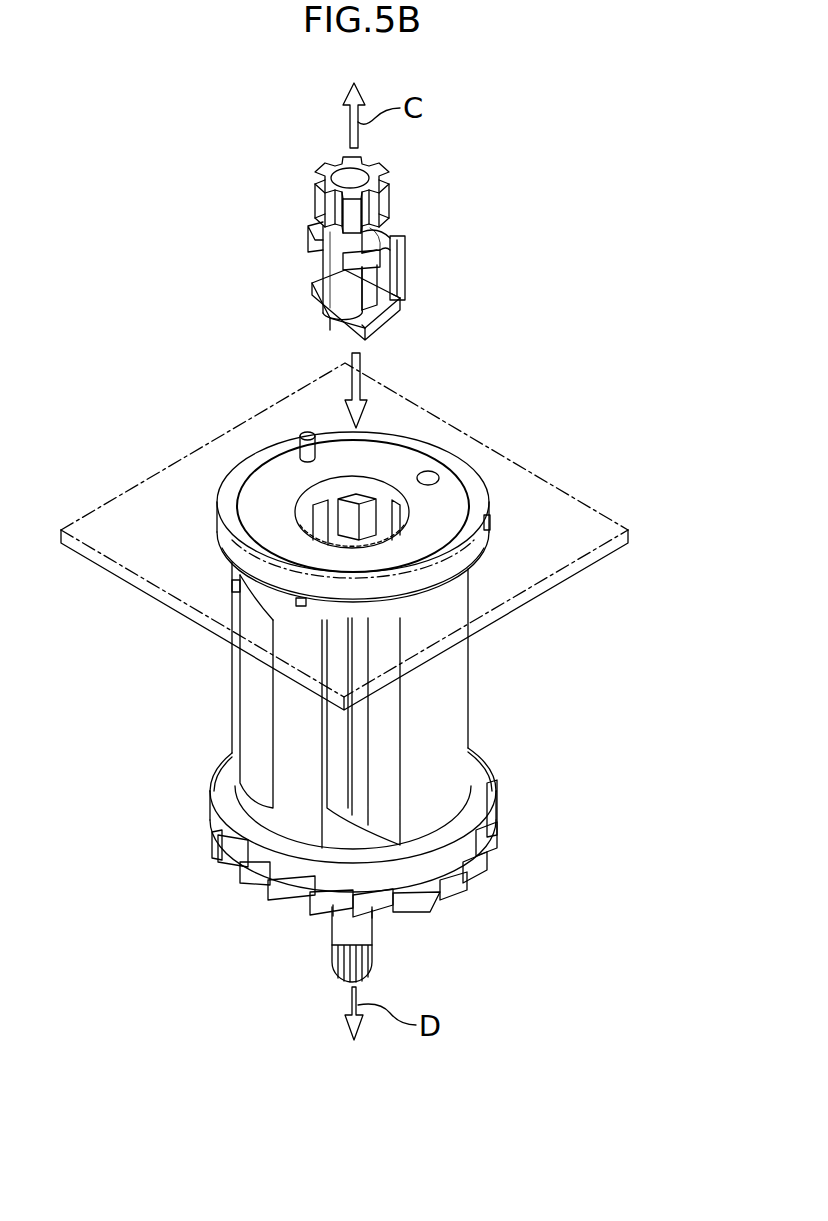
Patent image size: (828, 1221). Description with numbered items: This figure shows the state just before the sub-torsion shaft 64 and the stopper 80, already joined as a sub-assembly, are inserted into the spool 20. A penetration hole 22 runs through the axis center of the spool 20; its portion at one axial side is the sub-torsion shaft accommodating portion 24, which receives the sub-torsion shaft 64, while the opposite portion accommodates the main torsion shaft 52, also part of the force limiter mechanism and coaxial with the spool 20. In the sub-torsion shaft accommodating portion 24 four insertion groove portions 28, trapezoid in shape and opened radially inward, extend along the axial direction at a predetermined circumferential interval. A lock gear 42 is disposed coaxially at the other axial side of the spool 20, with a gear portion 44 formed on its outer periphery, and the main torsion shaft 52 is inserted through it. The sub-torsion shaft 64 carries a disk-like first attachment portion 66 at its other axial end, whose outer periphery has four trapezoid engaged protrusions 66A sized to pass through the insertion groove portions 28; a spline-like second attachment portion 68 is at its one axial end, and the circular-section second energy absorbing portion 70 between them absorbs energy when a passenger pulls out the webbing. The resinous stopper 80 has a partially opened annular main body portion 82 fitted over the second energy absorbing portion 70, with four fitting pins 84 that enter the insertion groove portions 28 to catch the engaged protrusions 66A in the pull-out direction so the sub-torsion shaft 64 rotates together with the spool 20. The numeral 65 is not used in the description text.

The spool 20 is at (484, 690).
The penetration hole 22 is at (373, 490).
The sub-torsion shaft accommodating portion 24 is at (333, 540).
The insertion groove portions 28 is at (323, 497).
The lock gear 42 is at (496, 857).
The gear portion 44 is at (452, 884).
The main torsion shaft 52 is at (386, 935).
The sub-torsion shaft 64 is at (314, 276).
The cap unit 65 is at (332, 172).
The second attachment portion 68 is at (380, 168).
The second energy absorbing portion 70 is at (335, 286).
The stopper 80 is at (403, 221).
The main body portion 82 is at (318, 228).
The fitting pins 84 is at (384, 298).
The first attachment portion 66 is at (314, 314).
The engaged protrusions 66A is at (370, 338).